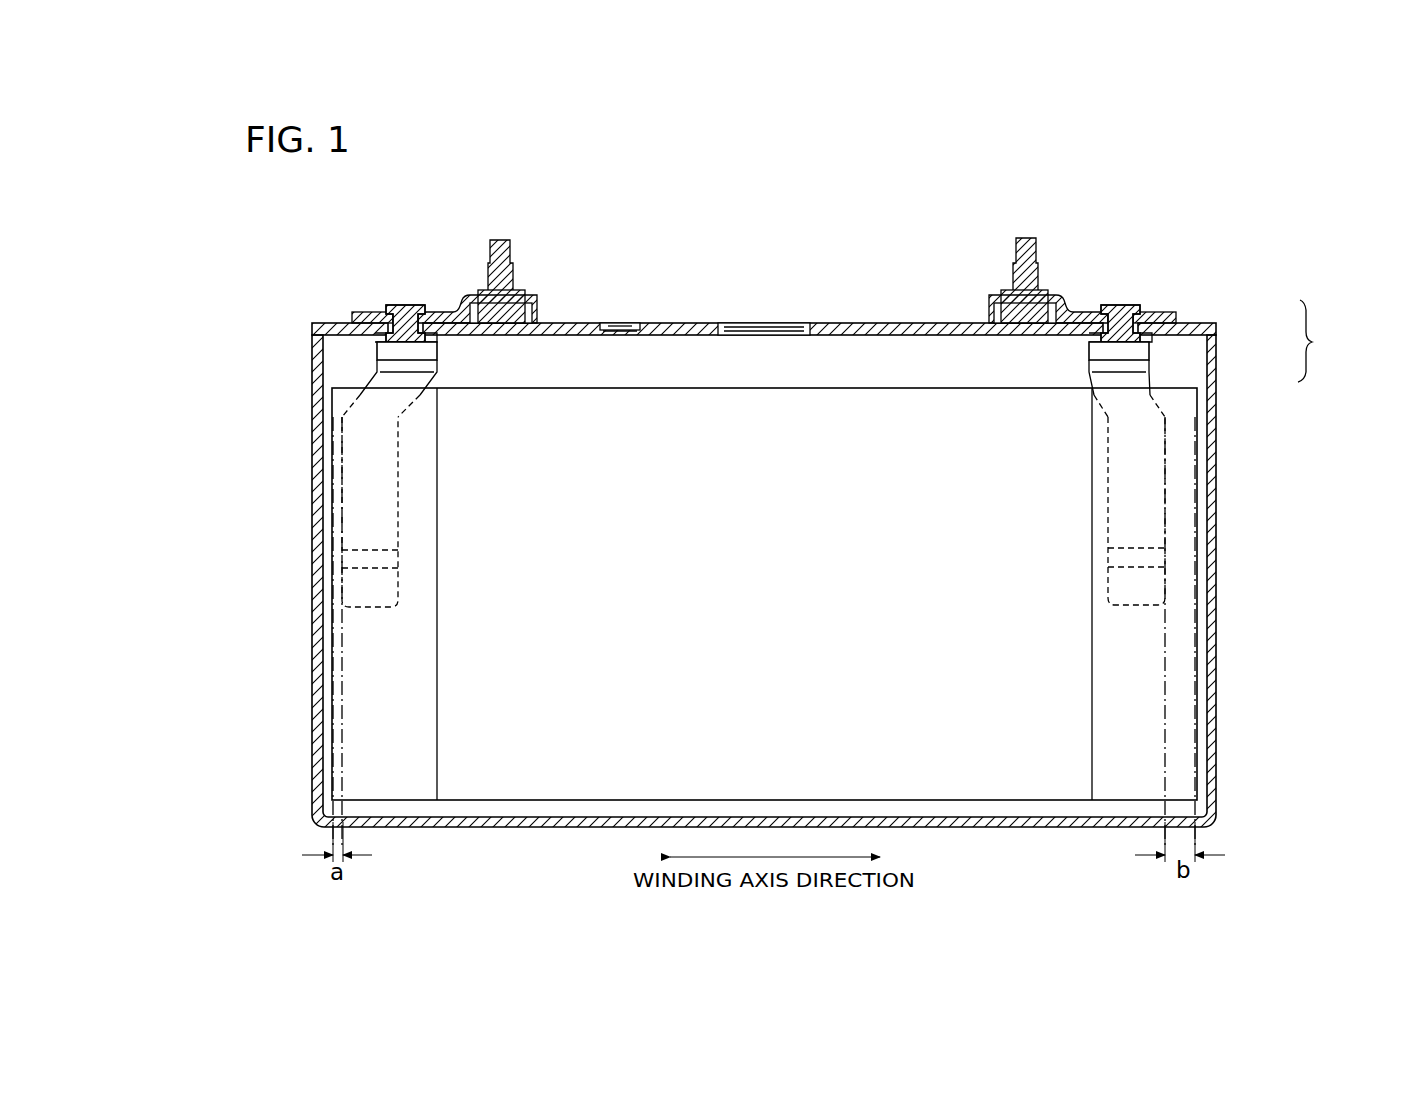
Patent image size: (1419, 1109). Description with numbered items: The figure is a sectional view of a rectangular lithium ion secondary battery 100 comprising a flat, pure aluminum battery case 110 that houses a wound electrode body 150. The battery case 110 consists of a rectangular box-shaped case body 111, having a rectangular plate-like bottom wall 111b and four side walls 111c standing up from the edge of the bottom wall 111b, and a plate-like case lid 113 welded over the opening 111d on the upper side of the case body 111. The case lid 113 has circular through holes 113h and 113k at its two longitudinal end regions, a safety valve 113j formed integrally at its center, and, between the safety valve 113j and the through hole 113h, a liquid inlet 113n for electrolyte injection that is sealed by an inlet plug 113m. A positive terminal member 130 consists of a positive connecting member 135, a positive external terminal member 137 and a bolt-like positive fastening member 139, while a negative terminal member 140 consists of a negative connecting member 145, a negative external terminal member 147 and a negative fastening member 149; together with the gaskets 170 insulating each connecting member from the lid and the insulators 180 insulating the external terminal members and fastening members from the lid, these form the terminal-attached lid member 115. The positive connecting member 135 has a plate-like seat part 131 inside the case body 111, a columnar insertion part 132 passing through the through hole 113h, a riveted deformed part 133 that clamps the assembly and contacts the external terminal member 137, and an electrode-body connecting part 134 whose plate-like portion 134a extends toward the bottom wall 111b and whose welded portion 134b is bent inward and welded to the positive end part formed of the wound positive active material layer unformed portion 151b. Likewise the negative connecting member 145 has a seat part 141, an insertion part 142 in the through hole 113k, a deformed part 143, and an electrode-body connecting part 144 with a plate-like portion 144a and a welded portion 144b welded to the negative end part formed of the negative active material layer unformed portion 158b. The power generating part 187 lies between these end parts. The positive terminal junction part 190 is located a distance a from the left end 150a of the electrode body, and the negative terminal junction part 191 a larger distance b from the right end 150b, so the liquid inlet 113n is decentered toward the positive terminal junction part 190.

The battery 100 is at (1225, 248).
The battery case 110 is at (1327, 341).
The case body 111 is at (1216, 356).
The bottom wall 111b is at (957, 808).
The side wall 111c is at (1217, 546).
The opening 111d is at (332, 326).
The case lid 113 is at (1218, 328).
The through hole 113h is at (378, 320).
The safety valve 113j is at (760, 323).
The through hole 113k is at (1142, 324).
The inlet plug 113m is at (620, 323).
The liquid inlet 113n is at (620, 335).
The terminal-attached lid member 115 is at (866, 320).
The positive terminal member 130 is at (422, 295).
The seat part 131 is at (378, 348).
The insertion part 132 is at (402, 318).
The deformed part 133 is at (400, 305).
The electrode-body connecting part 134 is at (236, 447).
The plate-like portion 134a is at (355, 468).
The welded portion 134b is at (345, 560).
The positive connecting member 135 is at (372, 383).
The positive external terminal member 137 is at (443, 312).
The positive fastening member 139 is at (506, 245).
The negative terminal member 140 is at (1069, 295).
The seat part 141 is at (1112, 350).
The insertion part 142 is at (1122, 312).
The deformed part 143 is at (1152, 312).
The electrode-body connecting part 144 is at (1305, 447).
The plate-like portion 144a is at (1170, 470).
The welded portion 144b is at (1170, 560).
The negative connecting member 145 is at (1155, 385).
The negative external terminal member 147 is at (1075, 305).
The negative fastening member 149 is at (1025, 245).
The wound electrode body 150 is at (578, 775).
The left end 150a is at (323, 746).
The right end 150b is at (1208, 746).
The positive active material layer unformed portion 151b is at (348, 666).
The negative active material layer unformed portion 158b is at (1160, 665).
The gasket 170 is at (432, 340).
The insulator 180 is at (530, 312).
The power generating part 187 is at (1053, 765).
The positive terminal junction part 190 is at (383, 590).
The negative terminal junction part 191 is at (1140, 590).